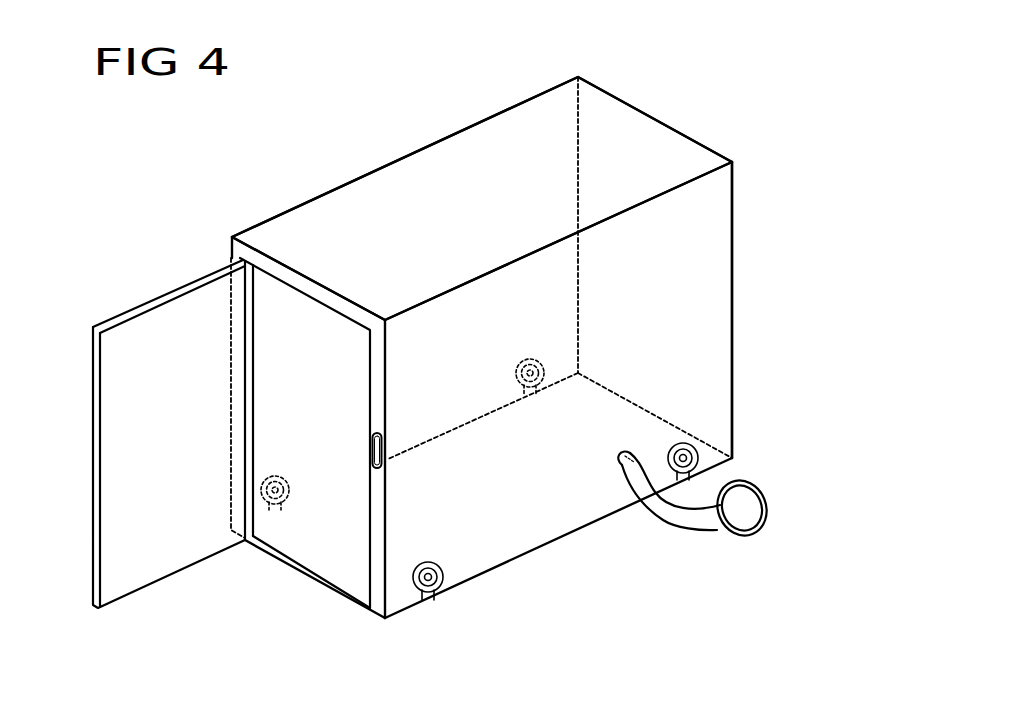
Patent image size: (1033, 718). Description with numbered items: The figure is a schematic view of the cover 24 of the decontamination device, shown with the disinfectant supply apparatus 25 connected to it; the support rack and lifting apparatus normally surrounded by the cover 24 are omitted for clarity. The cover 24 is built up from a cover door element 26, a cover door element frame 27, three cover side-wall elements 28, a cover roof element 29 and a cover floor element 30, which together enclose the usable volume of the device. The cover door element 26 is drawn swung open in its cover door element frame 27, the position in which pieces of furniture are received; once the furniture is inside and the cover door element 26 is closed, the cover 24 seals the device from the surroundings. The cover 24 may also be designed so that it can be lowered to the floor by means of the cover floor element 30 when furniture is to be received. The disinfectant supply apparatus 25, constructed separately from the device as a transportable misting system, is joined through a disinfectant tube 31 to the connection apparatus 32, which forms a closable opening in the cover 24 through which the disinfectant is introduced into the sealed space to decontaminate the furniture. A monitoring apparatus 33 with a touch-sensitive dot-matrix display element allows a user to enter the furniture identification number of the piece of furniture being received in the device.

The cover 24 is at (722, 122).
The disinfectant supply apparatus 25 is at (742, 510).
The cover door element 26 is at (153, 318).
The cover door element frame 27 is at (230, 260).
The cover side-wall element 28 is at (550, 280).
The cover roof element 29 is at (380, 207).
The cover floor element 30 is at (318, 563).
The disinfectant tube 31 is at (678, 517).
The connection apparatus 32 is at (629, 478).
The monitoring apparatus 33 is at (383, 453).